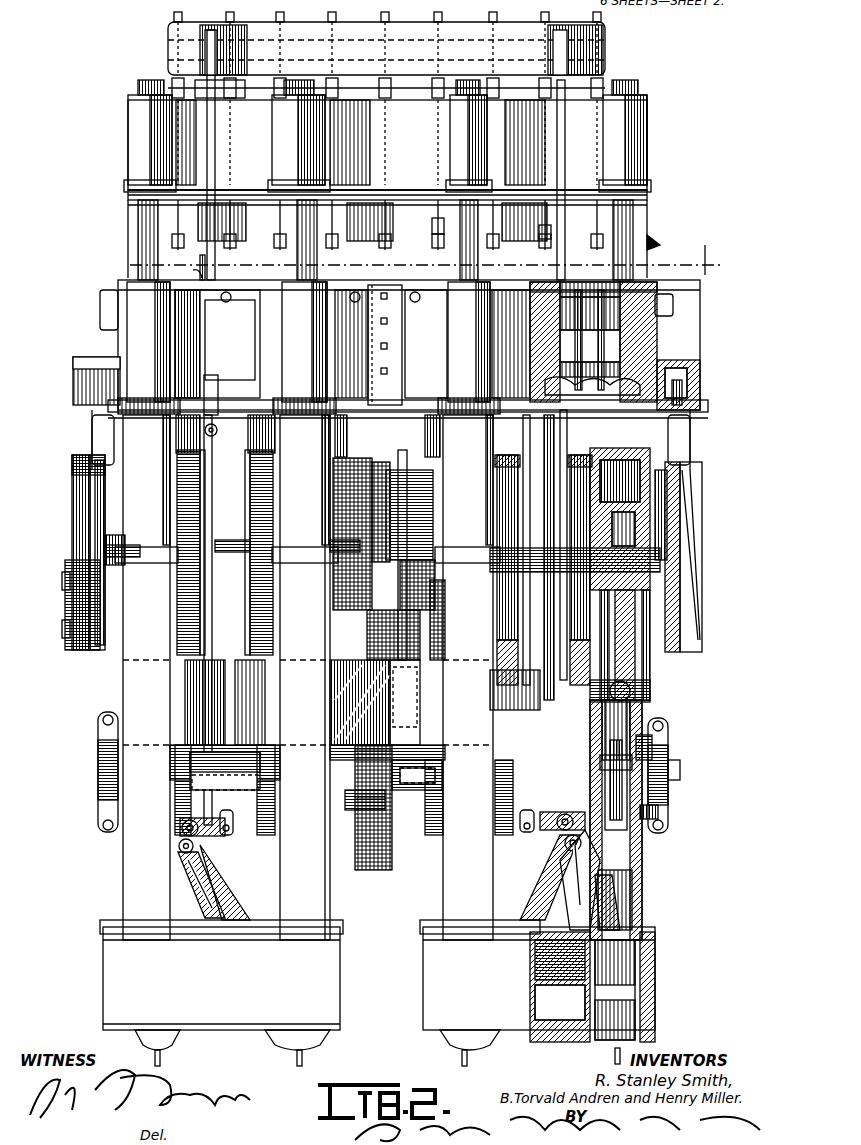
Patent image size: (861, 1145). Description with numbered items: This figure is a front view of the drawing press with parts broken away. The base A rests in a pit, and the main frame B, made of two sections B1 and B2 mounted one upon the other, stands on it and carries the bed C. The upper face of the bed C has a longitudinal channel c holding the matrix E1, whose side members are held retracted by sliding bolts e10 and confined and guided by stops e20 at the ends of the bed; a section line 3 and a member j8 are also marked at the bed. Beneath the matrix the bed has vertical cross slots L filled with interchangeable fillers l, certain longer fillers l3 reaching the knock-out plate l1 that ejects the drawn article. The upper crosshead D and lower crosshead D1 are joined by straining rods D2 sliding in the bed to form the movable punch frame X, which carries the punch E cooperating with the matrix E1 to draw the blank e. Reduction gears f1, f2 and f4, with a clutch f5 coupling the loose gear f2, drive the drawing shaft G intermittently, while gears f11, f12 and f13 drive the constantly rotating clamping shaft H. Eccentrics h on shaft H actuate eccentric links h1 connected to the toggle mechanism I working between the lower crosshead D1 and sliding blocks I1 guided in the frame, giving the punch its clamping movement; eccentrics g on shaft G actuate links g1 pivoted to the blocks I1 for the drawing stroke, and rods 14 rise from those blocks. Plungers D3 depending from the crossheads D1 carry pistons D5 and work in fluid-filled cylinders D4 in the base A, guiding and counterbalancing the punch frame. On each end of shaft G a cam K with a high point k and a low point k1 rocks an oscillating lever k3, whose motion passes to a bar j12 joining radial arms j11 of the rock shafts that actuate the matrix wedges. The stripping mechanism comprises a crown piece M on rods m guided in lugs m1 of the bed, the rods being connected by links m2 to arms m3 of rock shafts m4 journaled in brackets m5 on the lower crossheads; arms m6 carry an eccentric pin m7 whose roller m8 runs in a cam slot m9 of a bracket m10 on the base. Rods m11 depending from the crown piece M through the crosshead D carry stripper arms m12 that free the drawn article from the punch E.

The crown piece M is at (392, 22).
The rods m11 is at (385, 78).
The movable punch frame X is at (387, 152).
The upper crosshead D is at (640, 135).
The vertically disposed rods m is at (215, 170).
The tie or straining rods D2 is at (140, 238).
The punch E is at (255, 240).
The blank or plate e is at (195, 263).
The stripper arm m12 is at (543, 243).
The longitudinal channel c is at (638, 278).
The section line 3 is at (439, 261).
The bed C is at (115, 283).
The stops e20 is at (100, 305).
The sliding bolts e10 is at (230, 301).
The cover plate j8 is at (365, 300).
The lugs m1 is at (215, 375).
The main frame section B2 is at (305, 611).
The main frame B is at (131, 611).
The main frame section B1 is at (467, 611).
The vertical cross slots L is at (620, 375).
The fillers l is at (578, 360).
The longer fillers l3 is at (540, 320).
The knock-out plate l1 is at (556, 355).
The matrix E1 is at (545, 295).
The radial arms j11 is at (688, 368).
The bar j12 is at (690, 392).
The oscillating lever k3 is at (92, 425).
The cam K is at (75, 540).
The low point of cam k1 is at (80, 492).
The high point of cam k is at (85, 590).
The crank or drawing shaft G is at (95, 555).
The reduction gear f4 is at (195, 490).
The reduction gear f2 is at (348, 462).
The clutch mechanism f5 is at (405, 480).
The links m2 is at (215, 690).
The reduction gear f1 is at (338, 605).
The reduction gear f11 is at (335, 642).
The reduction gear f12 is at (391, 610).
The connecting rod 14 is at (520, 635).
The eccentrics g is at (675, 505).
The eccentric links g1 is at (630, 640).
The lower crosshead D1 is at (640, 870).
The sliding blocks I1 is at (340, 735).
The reduction gear f13 is at (365, 870).
The crank or clamping shaft H is at (396, 773).
The eccentrics h is at (668, 770).
The eccentric links h1 is at (660, 812).
The toggle mechanism I is at (620, 758).
The brackets m5 is at (185, 825).
The arms m3 is at (229, 832).
The pin m7 is at (179, 846).
The arms m6 is at (190, 885).
The bracket m10 is at (232, 895).
The rock shafts m4 is at (566, 845).
The antifriction roller m8 is at (570, 860).
The cam slot m9 is at (580, 885).
The plungers D3 is at (640, 900).
The base A is at (410, 975).
The pistons D5 is at (560, 987).
The cylinders D4 is at (625, 1015).